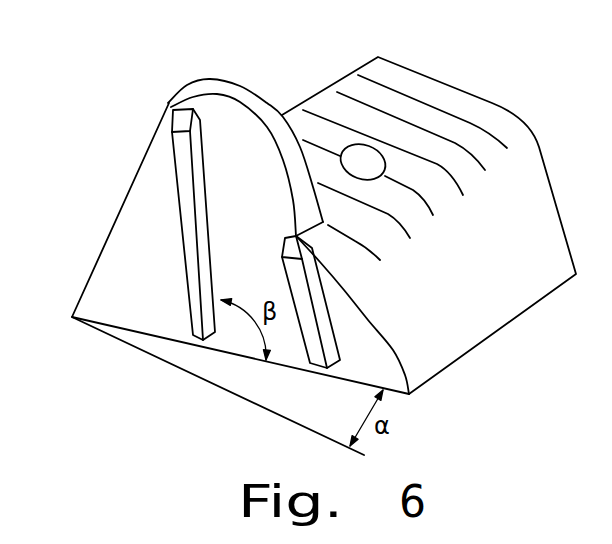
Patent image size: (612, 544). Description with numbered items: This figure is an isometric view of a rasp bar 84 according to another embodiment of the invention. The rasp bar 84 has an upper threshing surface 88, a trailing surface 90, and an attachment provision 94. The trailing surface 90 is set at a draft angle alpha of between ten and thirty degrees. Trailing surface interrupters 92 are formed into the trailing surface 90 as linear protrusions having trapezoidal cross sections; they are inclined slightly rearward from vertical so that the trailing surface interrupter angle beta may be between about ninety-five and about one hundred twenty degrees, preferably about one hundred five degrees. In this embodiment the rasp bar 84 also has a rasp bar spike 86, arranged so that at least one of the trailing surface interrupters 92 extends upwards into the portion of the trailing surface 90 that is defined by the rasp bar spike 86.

The rasp bar 84 is at (493, 100).
The rasp bar spike 86 is at (238, 83).
The upper threshing surface 88 is at (392, 100).
The trailing surface 90 is at (123, 258).
The trailing surface interrupters 92 is at (175, 192).
The attachment provision 94 is at (348, 145).